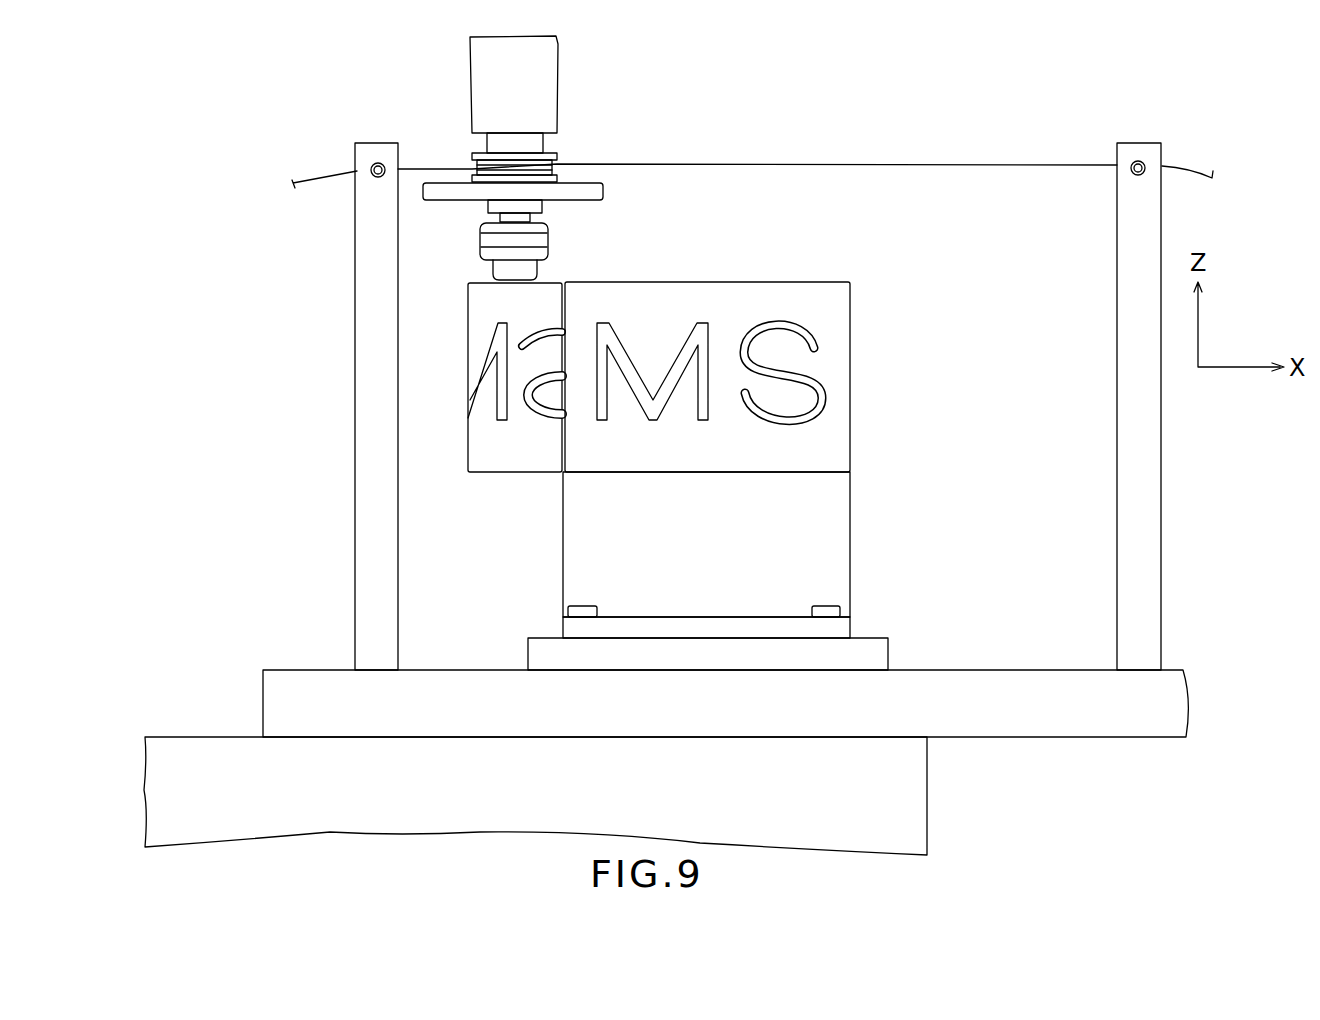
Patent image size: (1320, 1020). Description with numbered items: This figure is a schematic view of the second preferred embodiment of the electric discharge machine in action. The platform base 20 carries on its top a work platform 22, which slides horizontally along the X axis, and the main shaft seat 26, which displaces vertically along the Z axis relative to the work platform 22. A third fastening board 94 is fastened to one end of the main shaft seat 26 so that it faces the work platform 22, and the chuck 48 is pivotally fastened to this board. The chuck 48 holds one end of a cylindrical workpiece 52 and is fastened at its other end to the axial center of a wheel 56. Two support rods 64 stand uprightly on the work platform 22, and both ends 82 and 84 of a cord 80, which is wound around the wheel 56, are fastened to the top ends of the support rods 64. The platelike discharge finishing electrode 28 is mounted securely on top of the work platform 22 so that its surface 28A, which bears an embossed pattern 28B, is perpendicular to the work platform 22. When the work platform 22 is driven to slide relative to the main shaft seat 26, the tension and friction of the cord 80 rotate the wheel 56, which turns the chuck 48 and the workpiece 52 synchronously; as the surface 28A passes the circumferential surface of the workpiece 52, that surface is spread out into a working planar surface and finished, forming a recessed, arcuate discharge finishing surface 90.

The platform base 20 is at (903, 802).
The work platform 22 is at (1153, 687).
The main shaft seat 26 is at (555, 83).
The discharge finishing electrode 28 is at (725, 439).
The surface of finishing electrode 28A is at (744, 373).
The embossed pattern 28B is at (822, 392).
The chuck 48 is at (548, 243).
The cylindrical workpiece 52 is at (484, 405).
The wheel 56 is at (470, 155).
The support rods 64 is at (367, 353).
The cord 80 is at (892, 164).
The end of cord 82 is at (1192, 162).
The end of cord 84 is at (328, 178).
The discharge finishing surface 90 is at (482, 375).
The third fastening board 94 is at (580, 190).